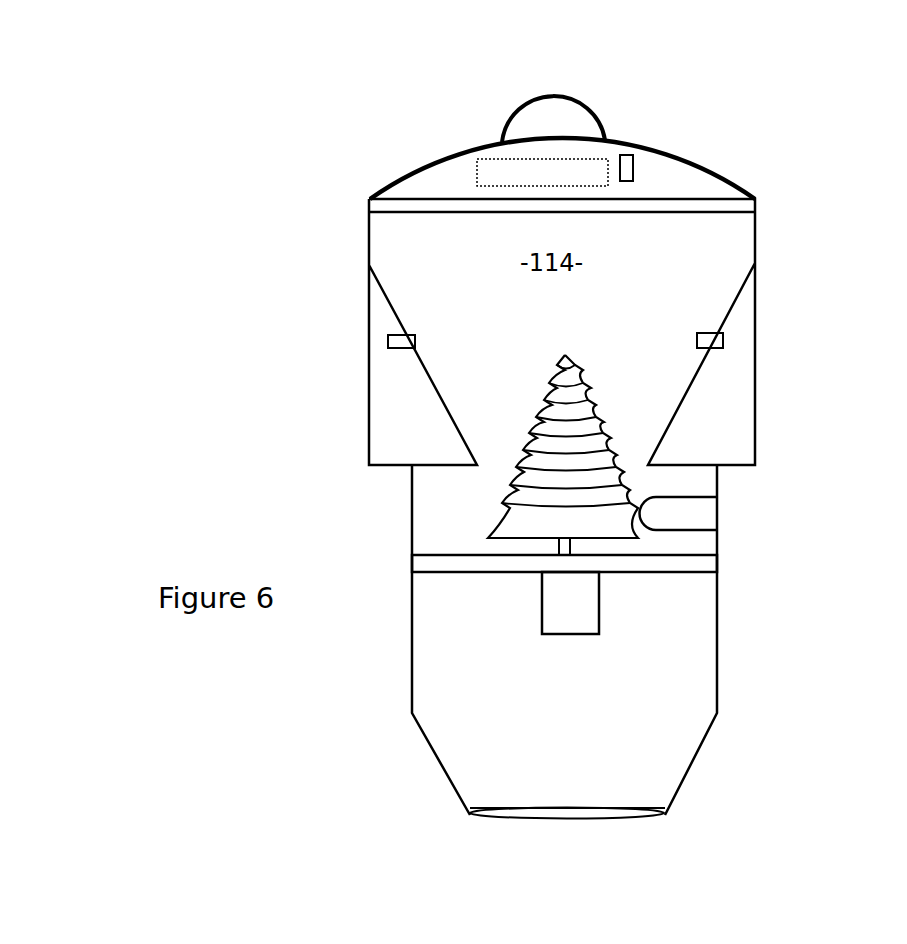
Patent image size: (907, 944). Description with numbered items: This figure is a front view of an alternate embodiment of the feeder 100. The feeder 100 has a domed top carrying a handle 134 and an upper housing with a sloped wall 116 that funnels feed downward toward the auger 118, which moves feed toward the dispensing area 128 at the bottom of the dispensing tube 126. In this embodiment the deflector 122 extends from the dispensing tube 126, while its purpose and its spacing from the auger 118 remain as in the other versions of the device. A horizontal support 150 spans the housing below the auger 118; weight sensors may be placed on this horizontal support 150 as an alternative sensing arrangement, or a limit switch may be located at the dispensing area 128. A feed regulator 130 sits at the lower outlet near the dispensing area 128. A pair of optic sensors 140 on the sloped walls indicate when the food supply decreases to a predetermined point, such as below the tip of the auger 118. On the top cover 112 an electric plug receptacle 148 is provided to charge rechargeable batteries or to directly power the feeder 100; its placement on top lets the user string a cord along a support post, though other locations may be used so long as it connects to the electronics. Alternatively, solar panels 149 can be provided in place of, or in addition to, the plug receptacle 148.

The feeder 100 is at (276, 281).
The dome lid 112 is at (436, 165).
The housing wall 116 is at (757, 357).
The auger 118 is at (497, 500).
The deflector 122 is at (643, 503).
The dispensing tube 126 is at (442, 740).
The dispensing area 128 is at (566, 816).
The feed regulator 130 is at (665, 812).
The handle 134 is at (600, 122).
The optic sensors 140 is at (388, 343).
The plug receptacle 148 is at (637, 170).
The solar panels 149 is at (490, 174).
The horizontal support 150 is at (703, 567).